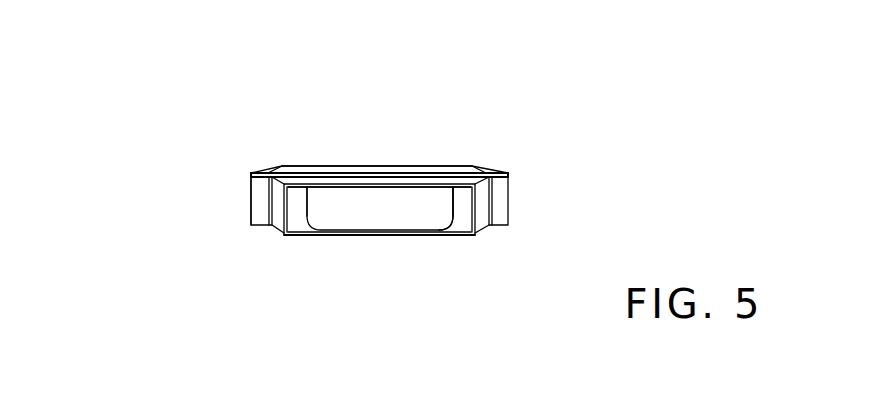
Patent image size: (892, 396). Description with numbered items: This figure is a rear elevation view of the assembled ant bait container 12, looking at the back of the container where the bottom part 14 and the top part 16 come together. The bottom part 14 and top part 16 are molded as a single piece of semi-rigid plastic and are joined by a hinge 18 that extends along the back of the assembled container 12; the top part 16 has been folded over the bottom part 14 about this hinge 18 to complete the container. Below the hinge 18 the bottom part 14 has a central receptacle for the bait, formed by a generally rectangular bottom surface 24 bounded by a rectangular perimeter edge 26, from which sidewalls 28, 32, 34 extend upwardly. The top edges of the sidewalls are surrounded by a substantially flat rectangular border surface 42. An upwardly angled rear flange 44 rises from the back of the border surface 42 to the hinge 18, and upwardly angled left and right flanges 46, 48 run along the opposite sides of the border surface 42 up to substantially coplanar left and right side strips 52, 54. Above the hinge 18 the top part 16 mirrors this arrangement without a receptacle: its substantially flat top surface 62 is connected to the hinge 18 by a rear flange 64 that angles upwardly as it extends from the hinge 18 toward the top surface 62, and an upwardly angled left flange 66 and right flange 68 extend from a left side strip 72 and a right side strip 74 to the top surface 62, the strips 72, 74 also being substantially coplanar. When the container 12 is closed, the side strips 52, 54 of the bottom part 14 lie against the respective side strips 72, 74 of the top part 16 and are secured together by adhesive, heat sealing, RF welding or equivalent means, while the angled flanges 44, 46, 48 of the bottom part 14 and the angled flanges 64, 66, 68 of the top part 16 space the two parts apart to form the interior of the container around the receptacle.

The container 12 is at (512, 99).
The bottom part 14 is at (381, 258).
The top part 16 is at (381, 142).
The hinge 18 is at (250, 177).
The bottom surface 24 is at (400, 235).
The perimeter edge 26 is at (303, 236).
The sidewall 28 is at (453, 190).
The sidewall 32 is at (418, 210).
The sidewall 34 is at (305, 203).
The border surface 42 is at (343, 186).
The rear flange 44 is at (405, 182).
The left flange 46 is at (485, 220).
The right flange 48 is at (275, 222).
The left side strip 52 is at (503, 210).
The right side strip 54 is at (257, 212).
The top surface 62 is at (298, 165).
The rear flange 64 is at (338, 167).
The left flange 66 is at (480, 173).
The right flange 68 is at (263, 172).
The left side strip 72 is at (502, 174).
The right side strip 74 is at (261, 175).